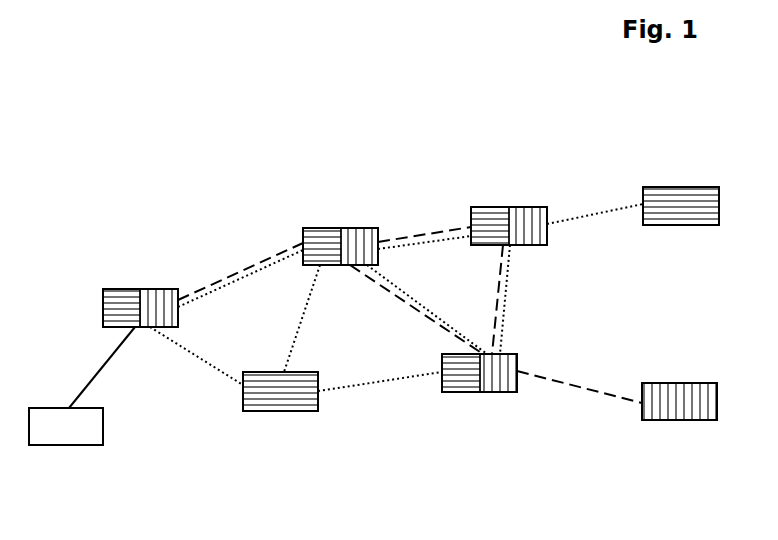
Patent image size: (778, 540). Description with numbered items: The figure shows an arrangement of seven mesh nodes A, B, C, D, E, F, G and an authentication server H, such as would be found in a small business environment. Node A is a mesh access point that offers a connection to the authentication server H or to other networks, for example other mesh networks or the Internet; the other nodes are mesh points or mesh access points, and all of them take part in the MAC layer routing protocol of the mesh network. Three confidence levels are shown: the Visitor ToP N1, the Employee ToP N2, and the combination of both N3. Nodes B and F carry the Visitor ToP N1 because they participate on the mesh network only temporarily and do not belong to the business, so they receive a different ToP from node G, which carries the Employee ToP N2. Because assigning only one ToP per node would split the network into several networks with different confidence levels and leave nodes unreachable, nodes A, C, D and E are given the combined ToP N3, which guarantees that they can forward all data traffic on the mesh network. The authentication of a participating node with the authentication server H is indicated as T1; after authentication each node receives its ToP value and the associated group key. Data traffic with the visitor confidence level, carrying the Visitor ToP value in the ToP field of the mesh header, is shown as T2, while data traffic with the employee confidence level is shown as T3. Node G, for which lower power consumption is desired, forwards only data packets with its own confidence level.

The node A is at (140, 308).
The node B is at (280, 391).
The node C is at (340, 246).
The node D is at (509, 226).
The node E is at (479, 373).
The node F is at (681, 206).
The node G is at (679, 401).
The authentication server H is at (66, 426).
The nodes with the Visitor ToP N1 is at (472, 300).
The nodes with the Employee ToP N2 is at (671, 422).
The nodes with the Employee ToP and additionally the Visitor ToP N3 is at (316, 297).
The authentication T1 is at (82, 334).
The data traffic with the Visitor ToP T2 is at (590, 159).
The data traffic with the Employee ToP T3 is at (579, 442).